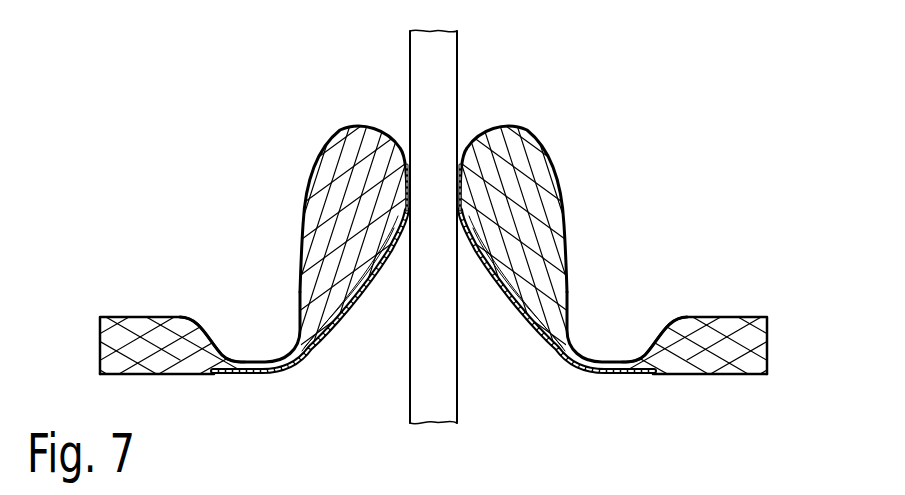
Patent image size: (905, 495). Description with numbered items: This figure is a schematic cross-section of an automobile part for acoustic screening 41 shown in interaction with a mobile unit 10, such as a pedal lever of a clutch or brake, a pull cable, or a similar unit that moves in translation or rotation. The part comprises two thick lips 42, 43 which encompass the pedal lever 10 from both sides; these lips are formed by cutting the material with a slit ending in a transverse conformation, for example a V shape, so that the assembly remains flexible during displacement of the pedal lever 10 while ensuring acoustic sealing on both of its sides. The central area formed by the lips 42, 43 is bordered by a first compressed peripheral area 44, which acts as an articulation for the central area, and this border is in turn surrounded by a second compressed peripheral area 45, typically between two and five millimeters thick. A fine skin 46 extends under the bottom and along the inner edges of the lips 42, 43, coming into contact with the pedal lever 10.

The mobile unit 10 is at (458, 52).
The automobile part for acoustic screening 41 is at (782, 98).
The thick lip 42 is at (330, 147).
The thick lip 43 is at (537, 147).
The first compressed peripheral area 44 is at (258, 362).
The second compressed peripheral area 45 is at (133, 316).
The fine skin 46 is at (330, 322).